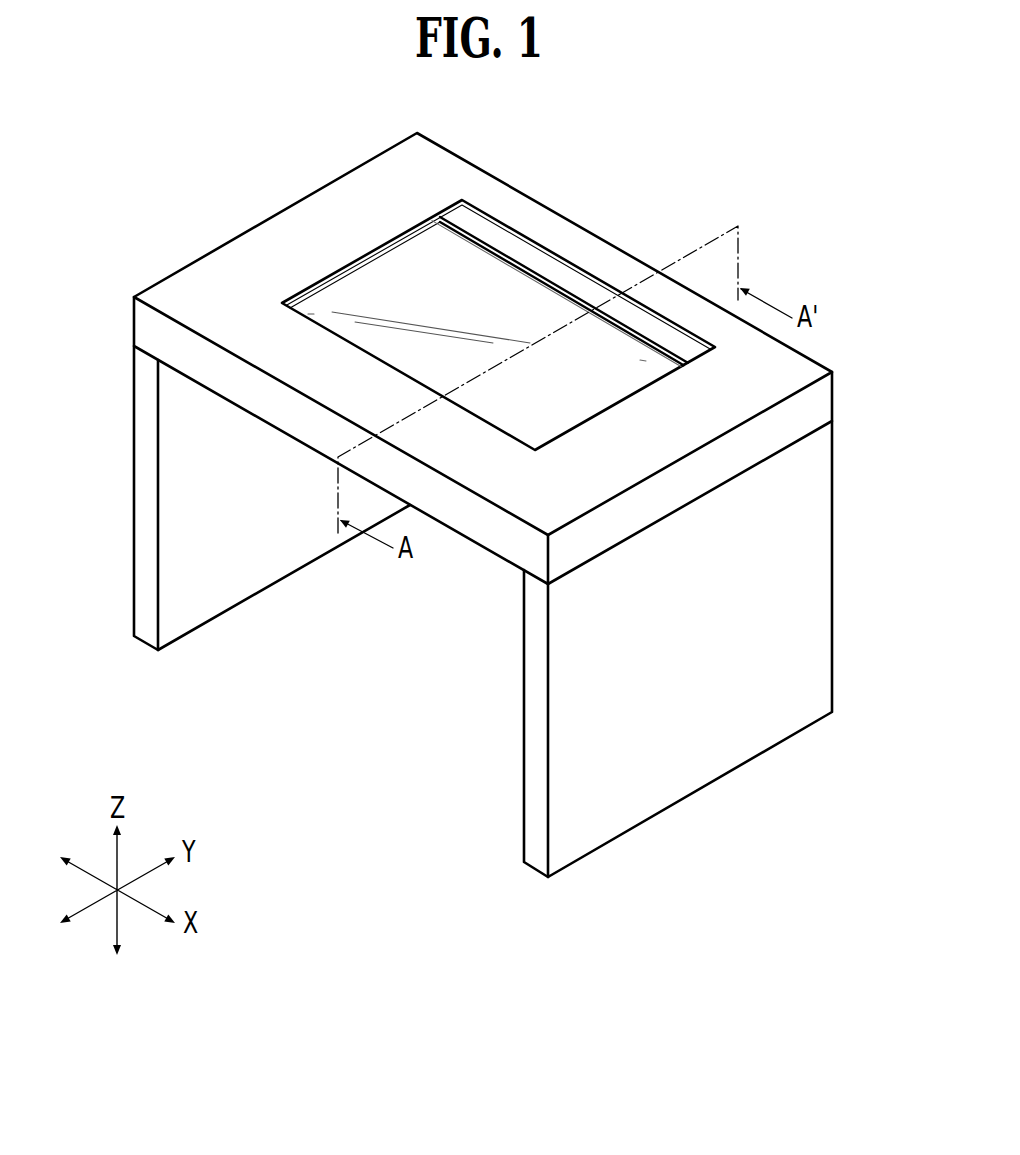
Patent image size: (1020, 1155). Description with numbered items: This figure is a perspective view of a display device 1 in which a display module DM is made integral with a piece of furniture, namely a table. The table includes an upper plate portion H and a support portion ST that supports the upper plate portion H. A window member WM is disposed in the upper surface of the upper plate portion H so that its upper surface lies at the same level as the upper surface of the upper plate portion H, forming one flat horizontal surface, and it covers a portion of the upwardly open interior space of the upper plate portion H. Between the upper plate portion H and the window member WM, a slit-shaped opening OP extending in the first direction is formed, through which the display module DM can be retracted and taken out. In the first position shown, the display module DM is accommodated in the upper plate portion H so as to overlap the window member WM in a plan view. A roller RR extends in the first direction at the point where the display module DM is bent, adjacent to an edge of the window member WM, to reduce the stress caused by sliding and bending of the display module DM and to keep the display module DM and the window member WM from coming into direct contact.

The display device 1 is at (185, 158).
The upper plate portion H is at (822, 402).
The window member WM is at (360, 255).
The display module DM is at (417, 265).
The roller RR is at (478, 240).
The opening OP is at (586, 282).
The support portion ST is at (145, 483).